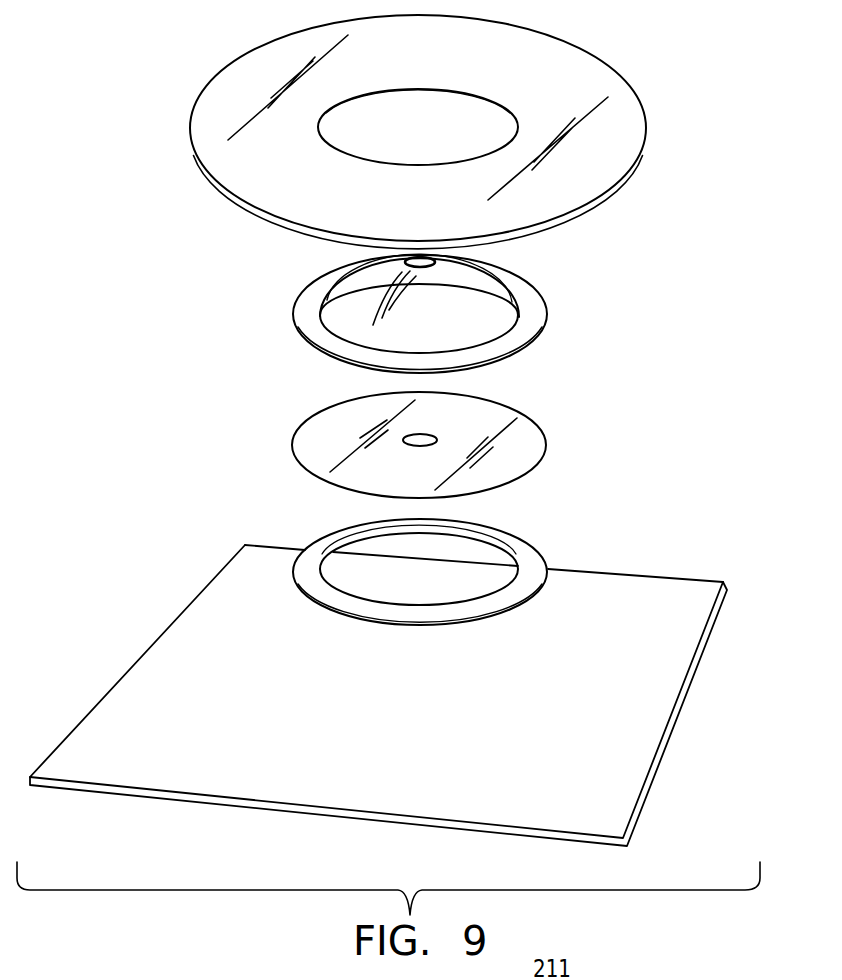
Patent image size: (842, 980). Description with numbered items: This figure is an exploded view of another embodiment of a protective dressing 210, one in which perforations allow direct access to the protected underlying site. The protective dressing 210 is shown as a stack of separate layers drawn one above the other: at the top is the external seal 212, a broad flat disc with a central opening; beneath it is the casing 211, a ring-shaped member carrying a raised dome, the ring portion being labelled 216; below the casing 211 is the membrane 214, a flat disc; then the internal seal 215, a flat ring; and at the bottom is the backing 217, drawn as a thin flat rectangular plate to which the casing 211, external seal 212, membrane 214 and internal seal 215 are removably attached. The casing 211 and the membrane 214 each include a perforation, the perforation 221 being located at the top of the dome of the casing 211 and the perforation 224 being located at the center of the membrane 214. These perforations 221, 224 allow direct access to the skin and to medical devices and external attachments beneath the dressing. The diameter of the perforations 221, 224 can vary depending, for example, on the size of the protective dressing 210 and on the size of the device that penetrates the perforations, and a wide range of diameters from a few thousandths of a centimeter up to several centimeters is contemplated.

The protective dressing 210 is at (640, 978).
The casing 211 is at (381, 312).
The external seal 212 is at (195, 62).
The membrane 214 is at (374, 434).
The internal seal 215 is at (325, 523).
The ring flange 216 is at (314, 337).
The backing 217 is at (652, 610).
The perforation 221 is at (437, 258).
The perforation 224 is at (436, 436).